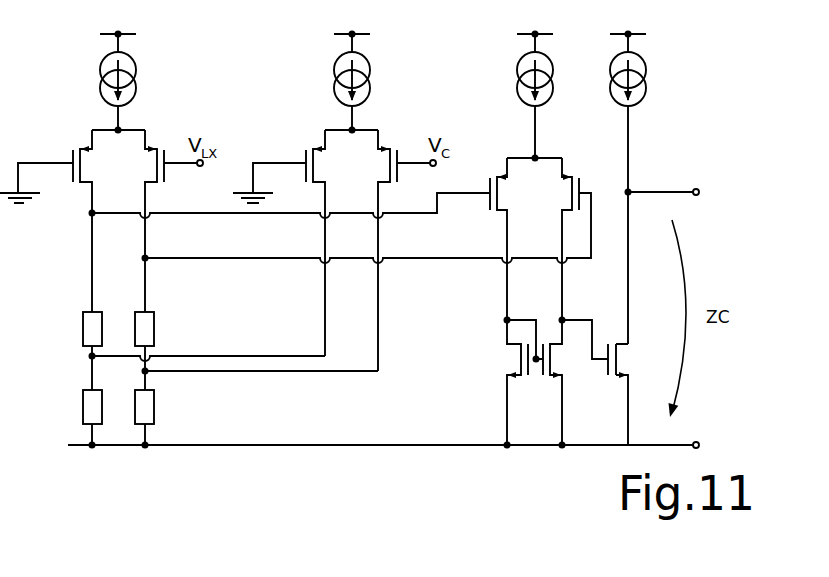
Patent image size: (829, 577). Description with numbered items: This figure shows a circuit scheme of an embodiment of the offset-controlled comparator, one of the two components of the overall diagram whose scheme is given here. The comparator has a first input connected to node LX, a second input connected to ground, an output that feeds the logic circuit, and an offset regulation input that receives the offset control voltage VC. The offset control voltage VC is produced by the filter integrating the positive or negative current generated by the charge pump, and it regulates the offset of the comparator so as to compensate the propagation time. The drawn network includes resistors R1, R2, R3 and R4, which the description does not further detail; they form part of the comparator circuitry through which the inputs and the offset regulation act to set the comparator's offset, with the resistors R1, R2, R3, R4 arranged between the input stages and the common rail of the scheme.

The resistor R1 is at (76, 329).
The resistor R2 is at (162, 329).
The resistor R3 is at (76, 407).
The resistor R4 is at (162, 407).